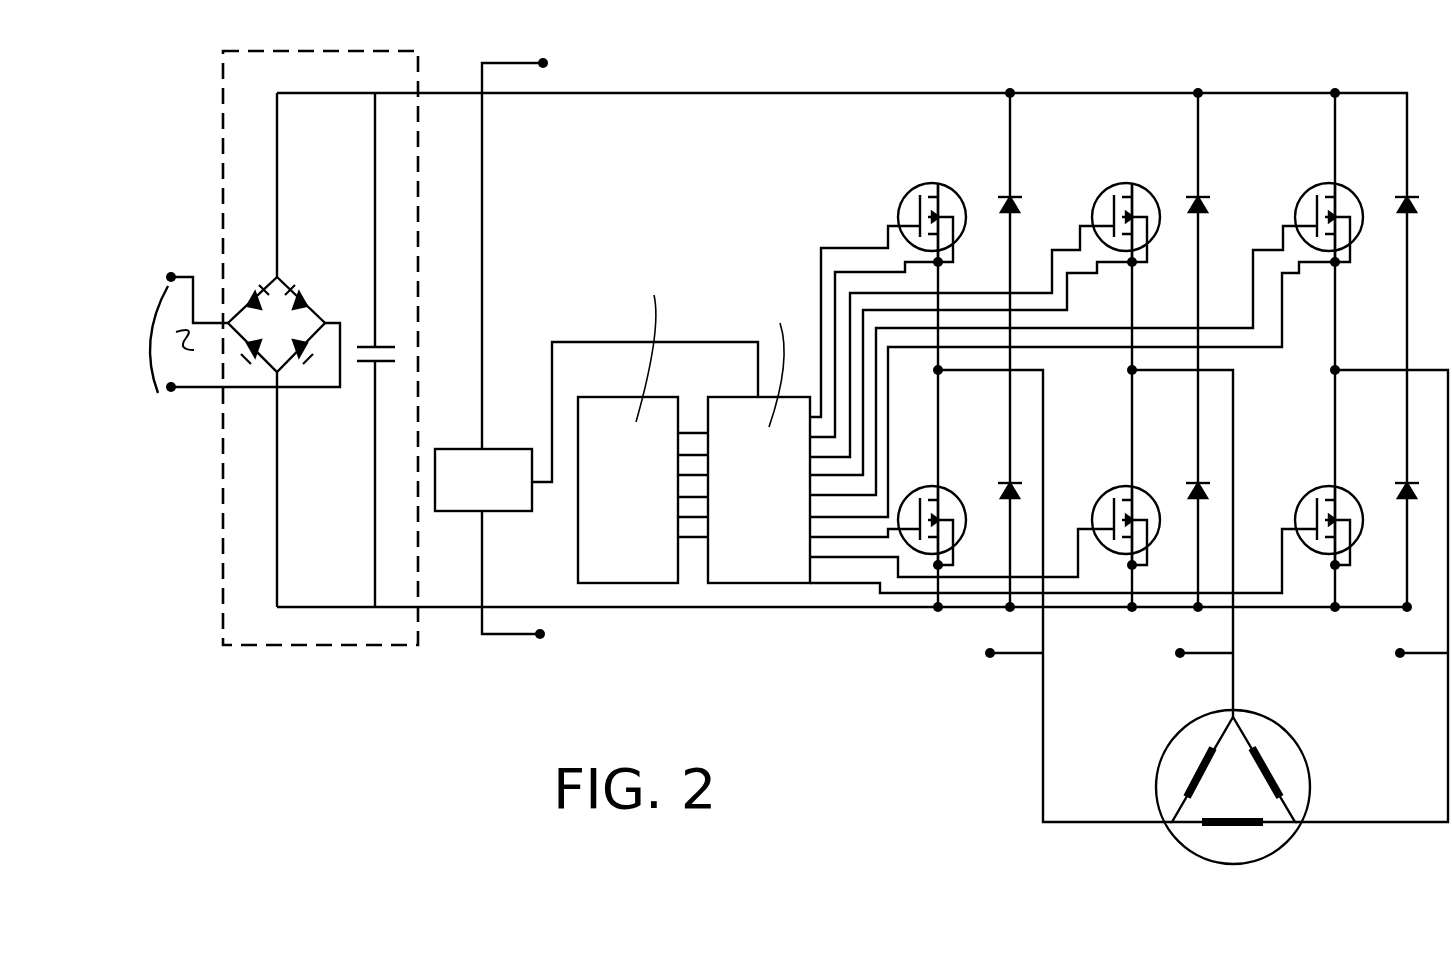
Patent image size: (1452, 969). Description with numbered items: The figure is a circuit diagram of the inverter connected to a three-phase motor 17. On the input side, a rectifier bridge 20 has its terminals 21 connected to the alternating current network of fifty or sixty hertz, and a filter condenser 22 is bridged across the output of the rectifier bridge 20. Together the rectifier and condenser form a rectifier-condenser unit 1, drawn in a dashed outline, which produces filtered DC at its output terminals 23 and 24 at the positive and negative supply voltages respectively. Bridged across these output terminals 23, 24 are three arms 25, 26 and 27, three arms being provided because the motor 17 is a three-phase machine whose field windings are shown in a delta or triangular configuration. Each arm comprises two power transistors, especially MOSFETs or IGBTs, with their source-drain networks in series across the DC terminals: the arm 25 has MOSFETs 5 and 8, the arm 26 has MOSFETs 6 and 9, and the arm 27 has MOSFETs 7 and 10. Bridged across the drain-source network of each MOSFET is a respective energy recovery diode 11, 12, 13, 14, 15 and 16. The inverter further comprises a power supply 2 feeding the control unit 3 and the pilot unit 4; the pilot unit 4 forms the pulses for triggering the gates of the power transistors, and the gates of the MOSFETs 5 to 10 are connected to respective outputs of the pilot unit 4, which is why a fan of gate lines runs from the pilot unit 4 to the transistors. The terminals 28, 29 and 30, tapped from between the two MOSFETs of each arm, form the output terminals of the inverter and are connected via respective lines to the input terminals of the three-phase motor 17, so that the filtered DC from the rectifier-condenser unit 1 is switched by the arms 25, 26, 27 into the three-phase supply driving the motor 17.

The rectifier-condenser unit 1 is at (222, 123).
The power supply 2 is at (502, 470).
The control unit 3 is at (625, 560).
The pilot unit 4 is at (748, 557).
The MOSFET 5 is at (898, 200).
The MOSFET 6 is at (1120, 190).
The MOSFET 7 is at (1303, 190).
The MOSFET 8 is at (920, 485).
The MOSFET 9 is at (1113, 560).
The MOSFET 10 is at (1360, 538).
The energy recovery diode 11 is at (1003, 192).
The energy recovery diode 12 is at (1205, 195).
The energy recovery diode 13 is at (1395, 195).
The energy recovery diode 14 is at (1402, 480).
The energy recovery diode 15 is at (1190, 492).
The energy recovery diode 16 is at (1013, 508).
The three-phase motor 17 is at (1296, 745).
The rectifier bridge 20 is at (312, 312).
The terminals 21 is at (176, 392).
The filter condenser 22 is at (362, 362).
The output terminal 23 is at (510, 62).
The output terminal 24 is at (507, 636).
The arm 25 is at (938, 612).
The arm 26 is at (1198, 93).
The arm 27 is at (1345, 58).
The output terminal 28 is at (940, 372).
The output terminal 29 is at (1130, 368).
The output terminal 30 is at (1335, 370).